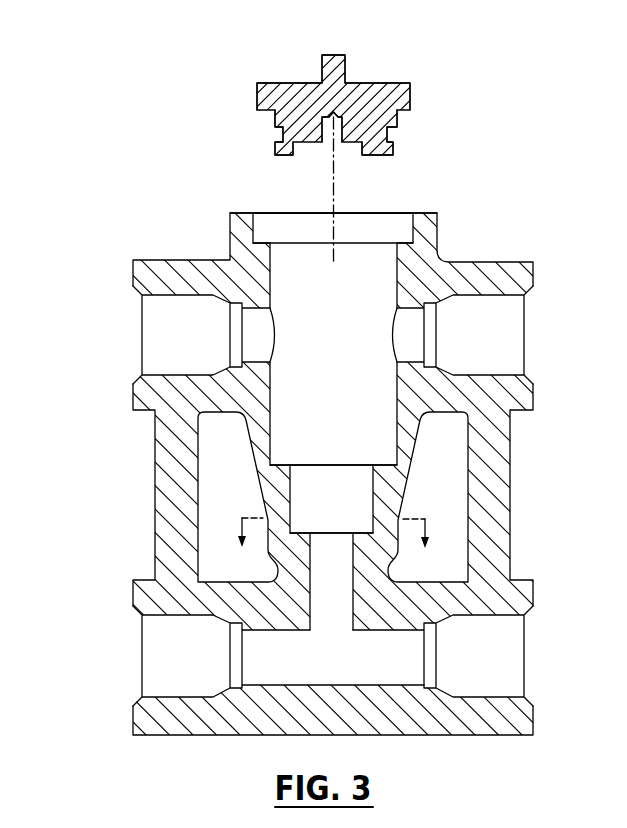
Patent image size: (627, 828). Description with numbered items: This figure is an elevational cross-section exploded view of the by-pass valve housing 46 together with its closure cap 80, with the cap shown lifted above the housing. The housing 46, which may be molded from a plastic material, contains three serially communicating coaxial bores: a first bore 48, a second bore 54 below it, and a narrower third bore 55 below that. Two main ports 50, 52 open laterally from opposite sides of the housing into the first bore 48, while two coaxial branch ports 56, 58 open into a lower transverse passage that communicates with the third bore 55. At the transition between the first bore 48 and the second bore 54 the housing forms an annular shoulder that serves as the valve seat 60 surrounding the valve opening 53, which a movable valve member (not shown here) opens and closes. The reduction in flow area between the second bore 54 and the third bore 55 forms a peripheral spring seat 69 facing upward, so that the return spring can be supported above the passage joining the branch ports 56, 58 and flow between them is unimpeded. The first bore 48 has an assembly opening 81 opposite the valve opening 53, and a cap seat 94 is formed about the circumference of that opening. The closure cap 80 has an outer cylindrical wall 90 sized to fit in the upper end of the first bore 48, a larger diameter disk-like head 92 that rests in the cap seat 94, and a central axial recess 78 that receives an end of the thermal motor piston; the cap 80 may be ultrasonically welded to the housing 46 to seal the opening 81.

The housing 46 is at (490, 262).
The first bore 48 is at (285, 427).
The main port 50 is at (507, 318).
The main port 52 is at (153, 319).
The valve opening 53 is at (400, 498).
The second bore 54 is at (300, 497).
The third bore 55 is at (328, 623).
The branch port 56 is at (512, 665).
The branch port 58 is at (157, 677).
The valve seat 60 is at (389, 465).
The spring seat 69 is at (362, 530).
The axial recess 78 is at (328, 128).
The closure cap 80 is at (410, 97).
The opening 81 is at (380, 213).
The outer cylindrical wall 90 is at (275, 118).
The head 92 is at (257, 97).
The cap seat 94 is at (263, 233).